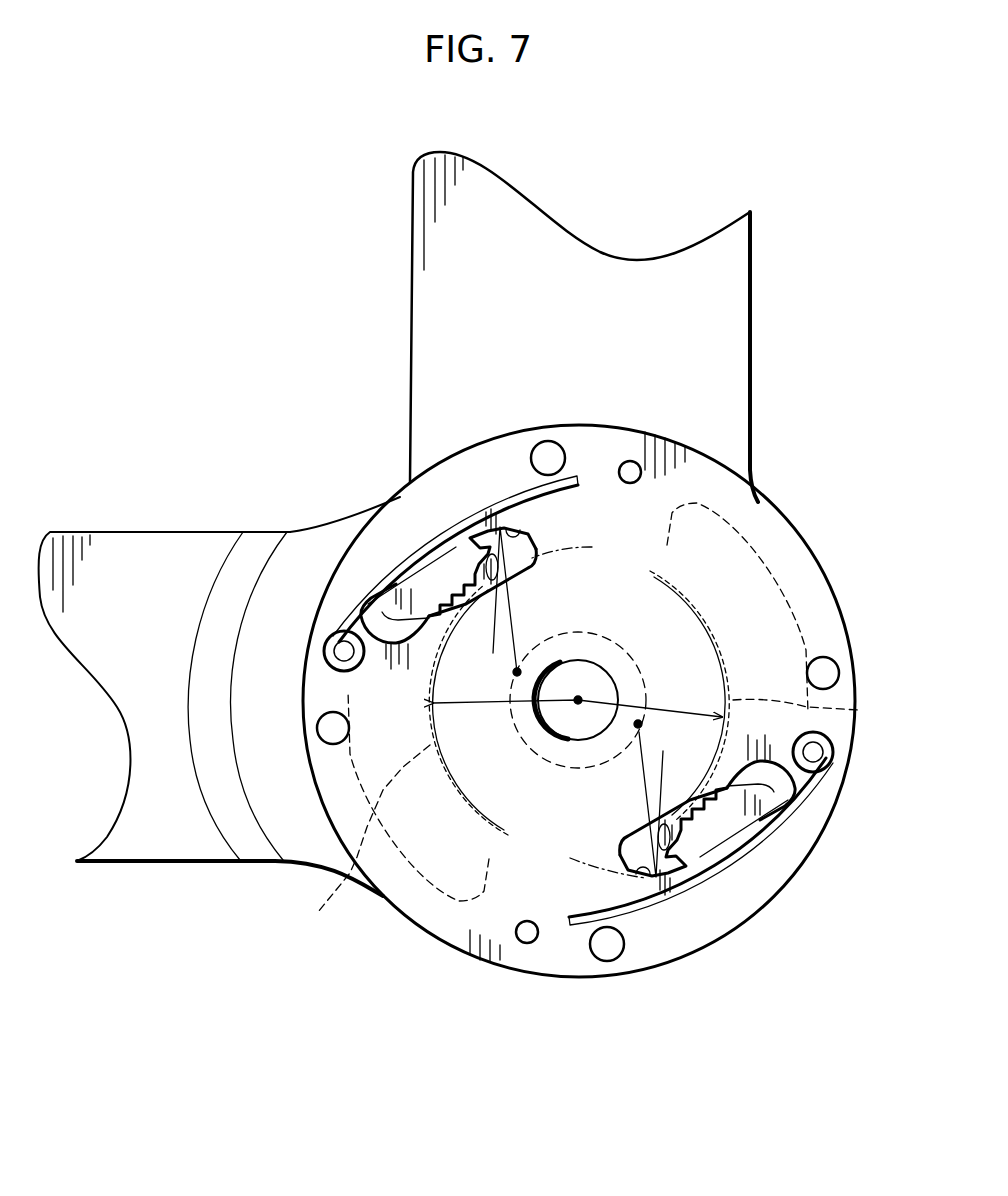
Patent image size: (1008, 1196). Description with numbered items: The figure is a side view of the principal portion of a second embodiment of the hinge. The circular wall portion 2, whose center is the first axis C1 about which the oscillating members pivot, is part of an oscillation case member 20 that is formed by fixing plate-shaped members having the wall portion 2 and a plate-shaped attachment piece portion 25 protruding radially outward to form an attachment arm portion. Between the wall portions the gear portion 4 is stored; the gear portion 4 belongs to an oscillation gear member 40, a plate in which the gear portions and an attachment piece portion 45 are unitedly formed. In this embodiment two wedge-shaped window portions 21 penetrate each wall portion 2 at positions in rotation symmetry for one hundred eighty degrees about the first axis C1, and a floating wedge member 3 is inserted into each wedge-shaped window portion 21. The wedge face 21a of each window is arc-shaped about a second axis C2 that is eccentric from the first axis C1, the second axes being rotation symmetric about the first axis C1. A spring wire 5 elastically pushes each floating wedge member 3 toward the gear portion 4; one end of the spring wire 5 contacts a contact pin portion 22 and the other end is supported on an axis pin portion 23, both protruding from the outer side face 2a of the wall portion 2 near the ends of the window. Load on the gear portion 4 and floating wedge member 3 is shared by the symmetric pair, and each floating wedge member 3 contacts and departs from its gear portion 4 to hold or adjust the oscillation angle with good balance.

The wall portion 2 is at (800, 514).
The outer side face 2a is at (805, 590).
The floating wedge member 3 is at (733, 823).
The gear portion 4 is at (858, 710).
The spring wire 5 is at (680, 908).
The oscillation case member 20 is at (206, 880).
The wedge-shaped window portion 21 is at (494, 570).
The wedge face 21a is at (493, 486).
The contact pin portion 22 is at (818, 755).
The axis pin portion 23 is at (604, 950).
The attachment piece portion 25 is at (160, 880).
The oscillation gear member 40 is at (753, 368).
The attachment piece portion 45 is at (728, 302).
The first axis C1 is at (582, 699).
The second axis C2 is at (519, 670).